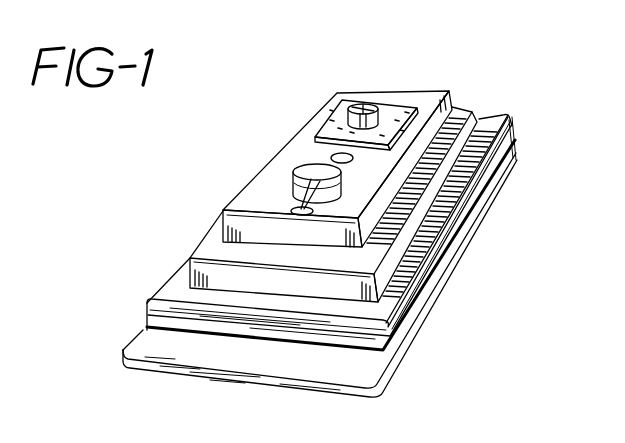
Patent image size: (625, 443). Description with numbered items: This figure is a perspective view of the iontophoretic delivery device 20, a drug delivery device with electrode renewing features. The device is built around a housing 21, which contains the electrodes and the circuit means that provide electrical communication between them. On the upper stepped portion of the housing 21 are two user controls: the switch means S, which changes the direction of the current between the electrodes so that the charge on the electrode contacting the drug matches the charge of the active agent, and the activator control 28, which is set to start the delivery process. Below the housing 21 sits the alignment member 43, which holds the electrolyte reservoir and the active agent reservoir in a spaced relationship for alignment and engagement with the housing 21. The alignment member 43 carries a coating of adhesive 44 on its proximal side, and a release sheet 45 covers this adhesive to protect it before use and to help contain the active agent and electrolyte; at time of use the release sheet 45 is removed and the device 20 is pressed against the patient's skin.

The iontophoretic delivery device 20 is at (331, 215).
The housing 21 is at (422, 214).
The activator control 28 is at (363, 104).
The switch means S is at (300, 166).
The alignment member 43 is at (245, 336).
The coating of adhesive 44 is at (357, 358).
The release sheet 45 is at (133, 350).